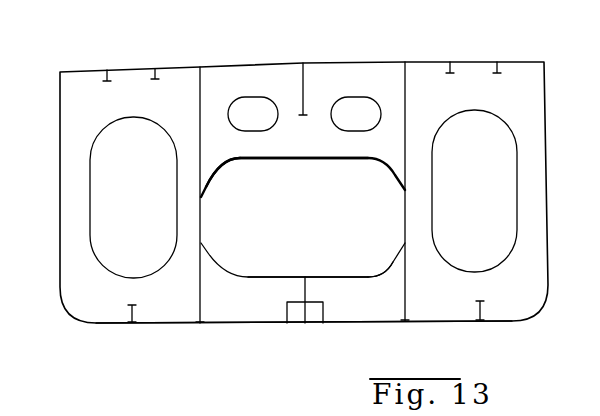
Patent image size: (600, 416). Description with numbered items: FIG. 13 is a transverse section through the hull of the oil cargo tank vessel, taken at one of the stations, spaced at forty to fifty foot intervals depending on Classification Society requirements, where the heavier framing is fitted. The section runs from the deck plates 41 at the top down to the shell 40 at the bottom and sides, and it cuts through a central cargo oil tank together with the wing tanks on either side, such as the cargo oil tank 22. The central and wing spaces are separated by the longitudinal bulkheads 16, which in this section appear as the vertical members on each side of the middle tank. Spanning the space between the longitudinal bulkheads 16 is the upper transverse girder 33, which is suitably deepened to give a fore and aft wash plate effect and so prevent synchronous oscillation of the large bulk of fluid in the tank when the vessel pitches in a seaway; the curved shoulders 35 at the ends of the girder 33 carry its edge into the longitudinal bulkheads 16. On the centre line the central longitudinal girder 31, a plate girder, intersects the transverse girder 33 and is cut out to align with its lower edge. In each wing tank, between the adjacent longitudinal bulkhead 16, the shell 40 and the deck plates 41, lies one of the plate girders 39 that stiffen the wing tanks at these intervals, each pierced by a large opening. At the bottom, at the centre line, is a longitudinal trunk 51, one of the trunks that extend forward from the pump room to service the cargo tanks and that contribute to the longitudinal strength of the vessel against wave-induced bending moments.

The longitudinal bulkhead 16 is at (203, 218).
The cargo oil tank 22 is at (121, 265).
The central longitudinal girder 31 is at (306, 80).
The upper transverse girder 33 is at (318, 147).
The curved shoulder 35 is at (214, 190).
The plate girder 39 is at (72, 187).
The shell 40 is at (234, 323).
The deck plates 41 is at (372, 62).
The longitudinal trunk 51 is at (297, 318).